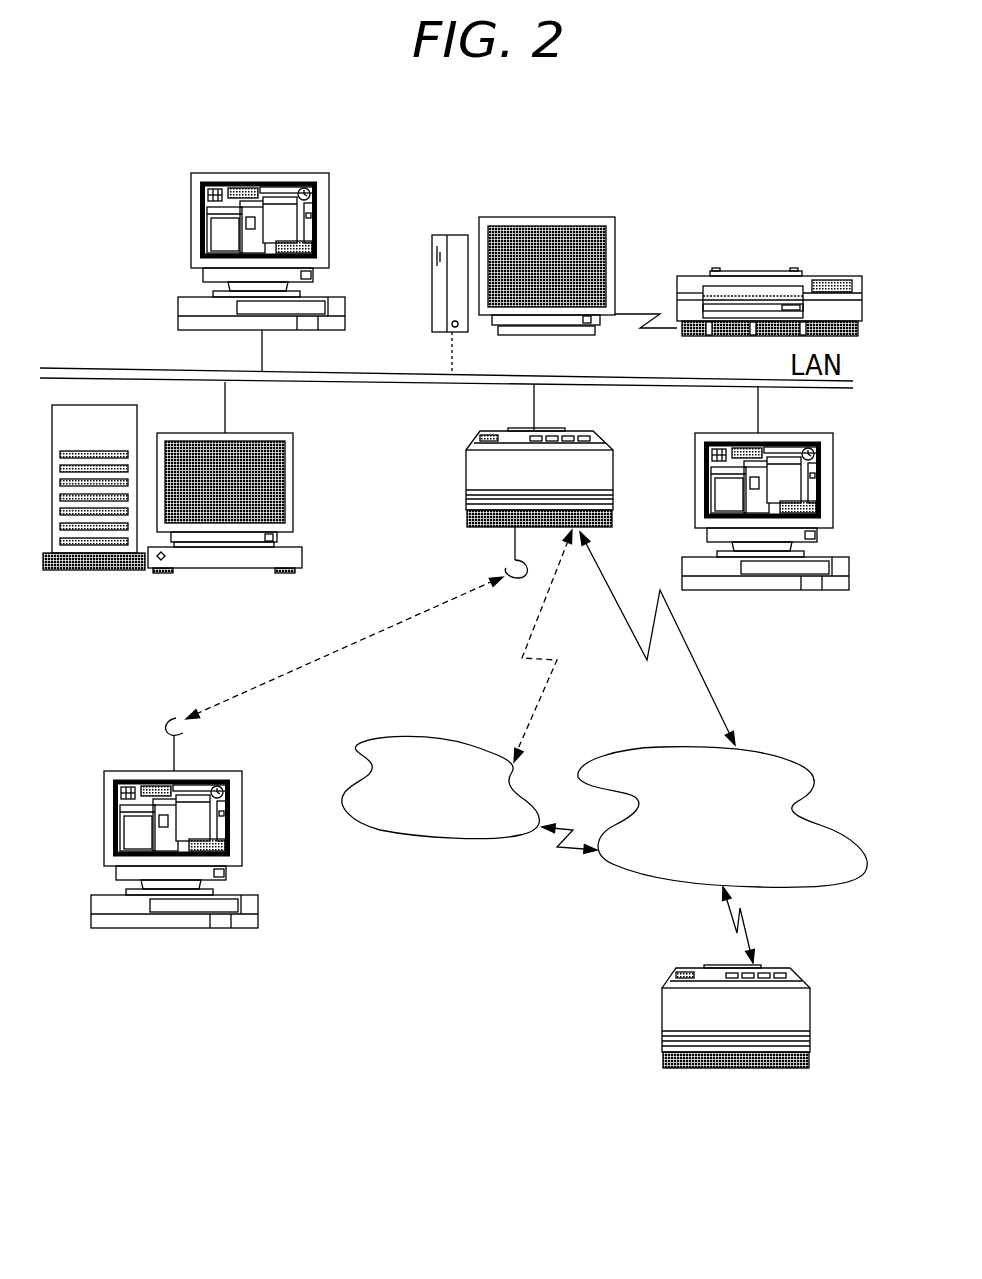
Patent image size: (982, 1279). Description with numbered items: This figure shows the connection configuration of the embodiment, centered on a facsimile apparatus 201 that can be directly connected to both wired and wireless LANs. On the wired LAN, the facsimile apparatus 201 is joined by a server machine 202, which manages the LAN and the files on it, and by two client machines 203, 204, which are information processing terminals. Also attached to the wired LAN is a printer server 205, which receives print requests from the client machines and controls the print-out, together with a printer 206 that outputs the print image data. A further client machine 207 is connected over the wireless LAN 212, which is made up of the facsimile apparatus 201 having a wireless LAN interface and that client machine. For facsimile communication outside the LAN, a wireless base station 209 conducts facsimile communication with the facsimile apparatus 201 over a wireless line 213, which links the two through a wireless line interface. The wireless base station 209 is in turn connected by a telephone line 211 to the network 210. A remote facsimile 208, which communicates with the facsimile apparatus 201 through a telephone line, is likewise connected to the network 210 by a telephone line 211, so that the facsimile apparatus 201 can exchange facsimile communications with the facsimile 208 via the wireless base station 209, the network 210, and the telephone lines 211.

The facsimile apparatus 201 is at (466, 482).
The server machine 202 is at (235, 568).
The client machine 203 is at (290, 173).
The client machine 204 is at (733, 590).
The printer server 205 is at (577, 217).
The printer 206 is at (812, 277).
The client machine 207 is at (124, 930).
The facsimile 208 is at (735, 1070).
The wireless base station 209 is at (440, 836).
The network 210 is at (662, 881).
The telephone line 211 is at (708, 682).
The wireless LAN 212 is at (308, 663).
The wireless line 213 is at (530, 628).